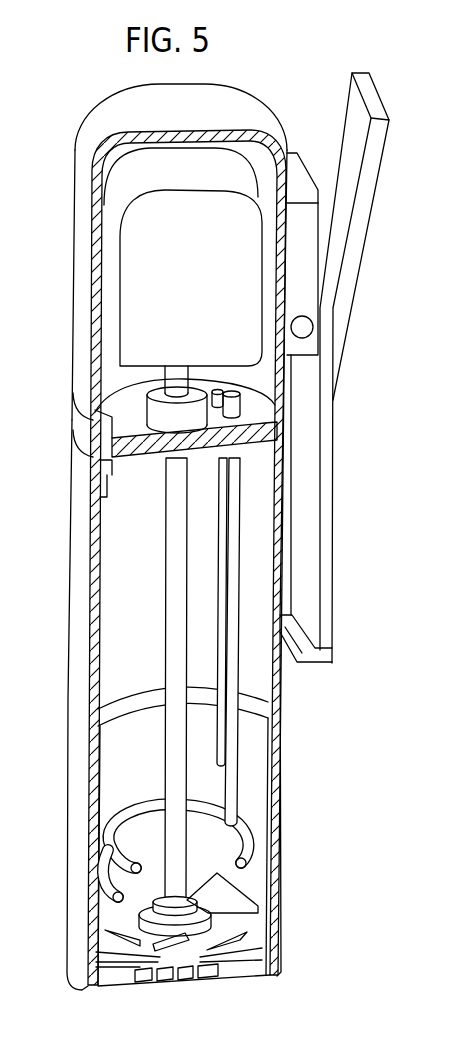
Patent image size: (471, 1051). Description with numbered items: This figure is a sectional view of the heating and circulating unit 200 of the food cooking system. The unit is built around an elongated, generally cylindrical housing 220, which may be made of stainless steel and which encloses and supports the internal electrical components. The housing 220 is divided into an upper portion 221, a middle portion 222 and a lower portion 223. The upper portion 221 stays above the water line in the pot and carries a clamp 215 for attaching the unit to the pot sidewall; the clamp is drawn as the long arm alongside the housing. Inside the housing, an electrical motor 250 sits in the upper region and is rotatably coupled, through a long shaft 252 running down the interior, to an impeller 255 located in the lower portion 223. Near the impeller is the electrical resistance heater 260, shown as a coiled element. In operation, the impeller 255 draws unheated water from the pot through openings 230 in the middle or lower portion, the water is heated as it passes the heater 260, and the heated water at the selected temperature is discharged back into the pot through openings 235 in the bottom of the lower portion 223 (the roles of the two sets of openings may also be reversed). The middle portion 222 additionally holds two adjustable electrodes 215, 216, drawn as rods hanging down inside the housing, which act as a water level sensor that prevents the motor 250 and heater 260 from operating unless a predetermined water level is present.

The heating and circulating unit 200 is at (324, 56).
The clamp / adjustable electrode 215 is at (362, 205).
The adjustable electrode 216 is at (220, 737).
The housing 220 is at (90, 650).
The upper portion 221 is at (72, 285).
The middle portion 222 is at (70, 585).
The lower portion 223 is at (72, 863).
The openings 230 is at (107, 710).
The openings 235 is at (108, 962).
The electrical motor 250 is at (107, 246).
The drive shaft 252 is at (165, 504).
The impeller 255 is at (253, 902).
The electrical resistance heater 260 is at (252, 853).